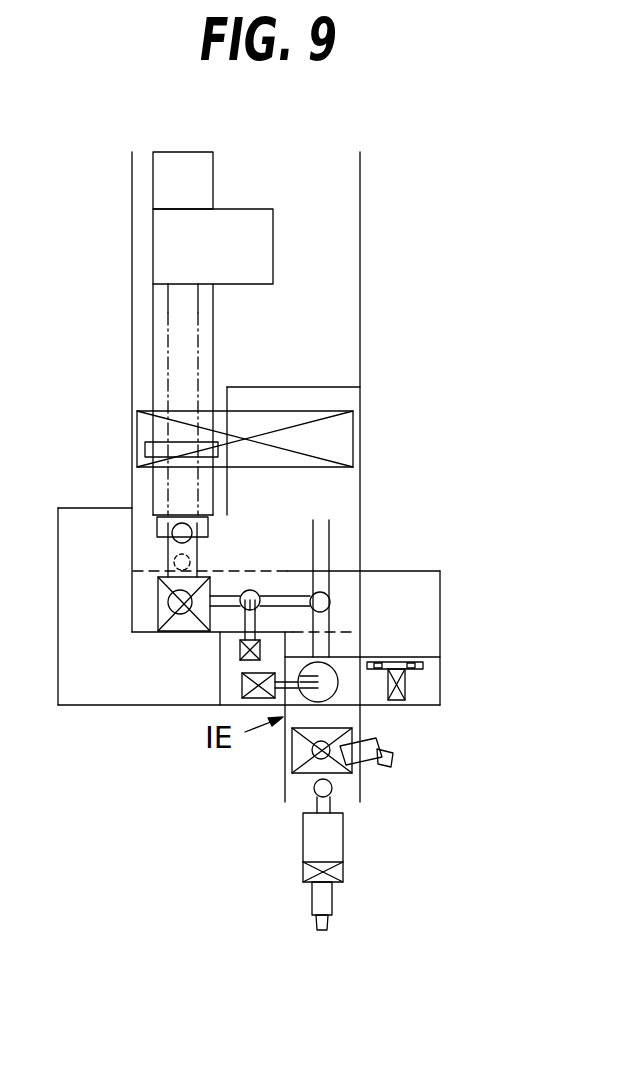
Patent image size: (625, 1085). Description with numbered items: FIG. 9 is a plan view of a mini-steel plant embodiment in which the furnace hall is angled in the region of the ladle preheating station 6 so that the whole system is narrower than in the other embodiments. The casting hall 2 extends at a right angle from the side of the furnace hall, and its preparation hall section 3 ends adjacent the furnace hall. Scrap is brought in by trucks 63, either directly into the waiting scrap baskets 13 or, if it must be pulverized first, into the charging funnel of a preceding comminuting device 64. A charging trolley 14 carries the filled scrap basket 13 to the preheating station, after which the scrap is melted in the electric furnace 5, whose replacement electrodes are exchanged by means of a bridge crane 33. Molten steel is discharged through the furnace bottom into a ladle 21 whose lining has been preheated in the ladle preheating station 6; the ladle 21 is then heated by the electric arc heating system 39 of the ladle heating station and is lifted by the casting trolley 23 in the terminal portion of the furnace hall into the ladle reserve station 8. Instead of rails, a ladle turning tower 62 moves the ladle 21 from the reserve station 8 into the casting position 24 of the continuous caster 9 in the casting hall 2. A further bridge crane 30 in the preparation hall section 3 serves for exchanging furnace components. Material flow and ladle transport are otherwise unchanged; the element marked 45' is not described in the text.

The casting hall 2 is at (367, 290).
The preparation hall section 3 is at (343, 489).
The electric furnace 5 is at (330, 675).
The ladle preheating station 6 is at (323, 598).
The ladle reserve station 8 is at (155, 618).
The continuous caster 9 is at (175, 355).
The scrap baskets 13 is at (348, 758).
The charging trolley 14 is at (345, 784).
The ladle 21 is at (173, 540).
The casting trolley 23 is at (190, 632).
The casting position 24 is at (173, 522).
The bridge crane 30 is at (337, 430).
The bridge crane 33 is at (407, 683).
The electric arc heating system 39 is at (252, 590).
The control valve 45' is at (213, 719).
The ladle turning tower 62 is at (183, 562).
The trucks 63 is at (357, 748).
The comminuting device 64 is at (330, 837).